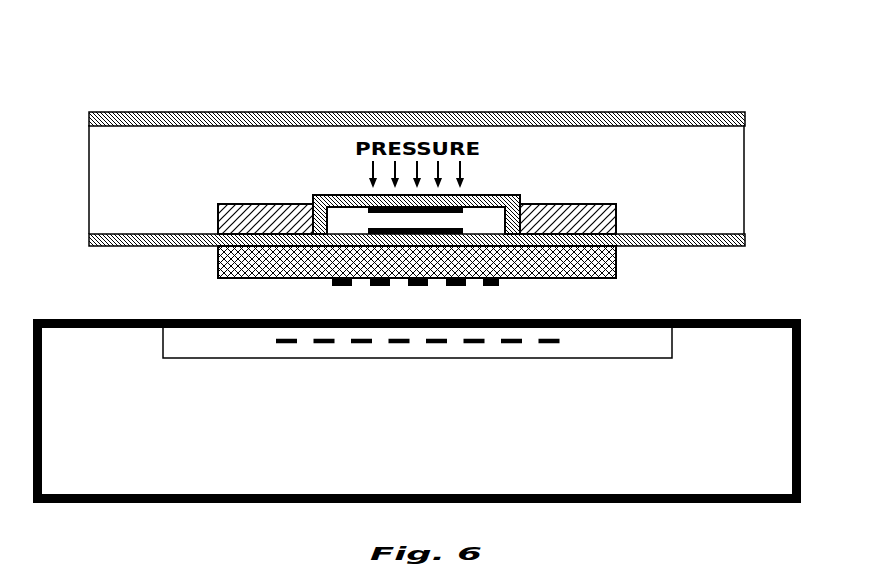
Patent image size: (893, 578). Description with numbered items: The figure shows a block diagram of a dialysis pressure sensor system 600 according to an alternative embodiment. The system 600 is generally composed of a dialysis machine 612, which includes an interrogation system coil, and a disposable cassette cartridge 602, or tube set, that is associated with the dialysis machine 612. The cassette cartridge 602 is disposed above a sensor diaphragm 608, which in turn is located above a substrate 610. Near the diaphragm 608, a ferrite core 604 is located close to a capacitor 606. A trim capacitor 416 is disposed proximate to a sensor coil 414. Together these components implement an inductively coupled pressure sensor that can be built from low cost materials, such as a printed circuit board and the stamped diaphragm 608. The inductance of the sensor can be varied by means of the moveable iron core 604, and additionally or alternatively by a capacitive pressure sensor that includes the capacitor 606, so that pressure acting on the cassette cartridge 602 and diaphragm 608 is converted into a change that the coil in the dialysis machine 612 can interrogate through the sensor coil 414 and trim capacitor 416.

The system 600 is at (90, 55).
The disposable cassette cartridge 602 is at (525, 112).
The ferrite core 604 is at (464, 210).
The capacitor 606 is at (464, 230).
The sensor diaphragm 608 is at (313, 196).
The substrate 610 is at (260, 228).
The dialysis machine 612 is at (436, 465).
The sensor coil 414 is at (498, 283).
The trim capacitor 416 is at (332, 283).